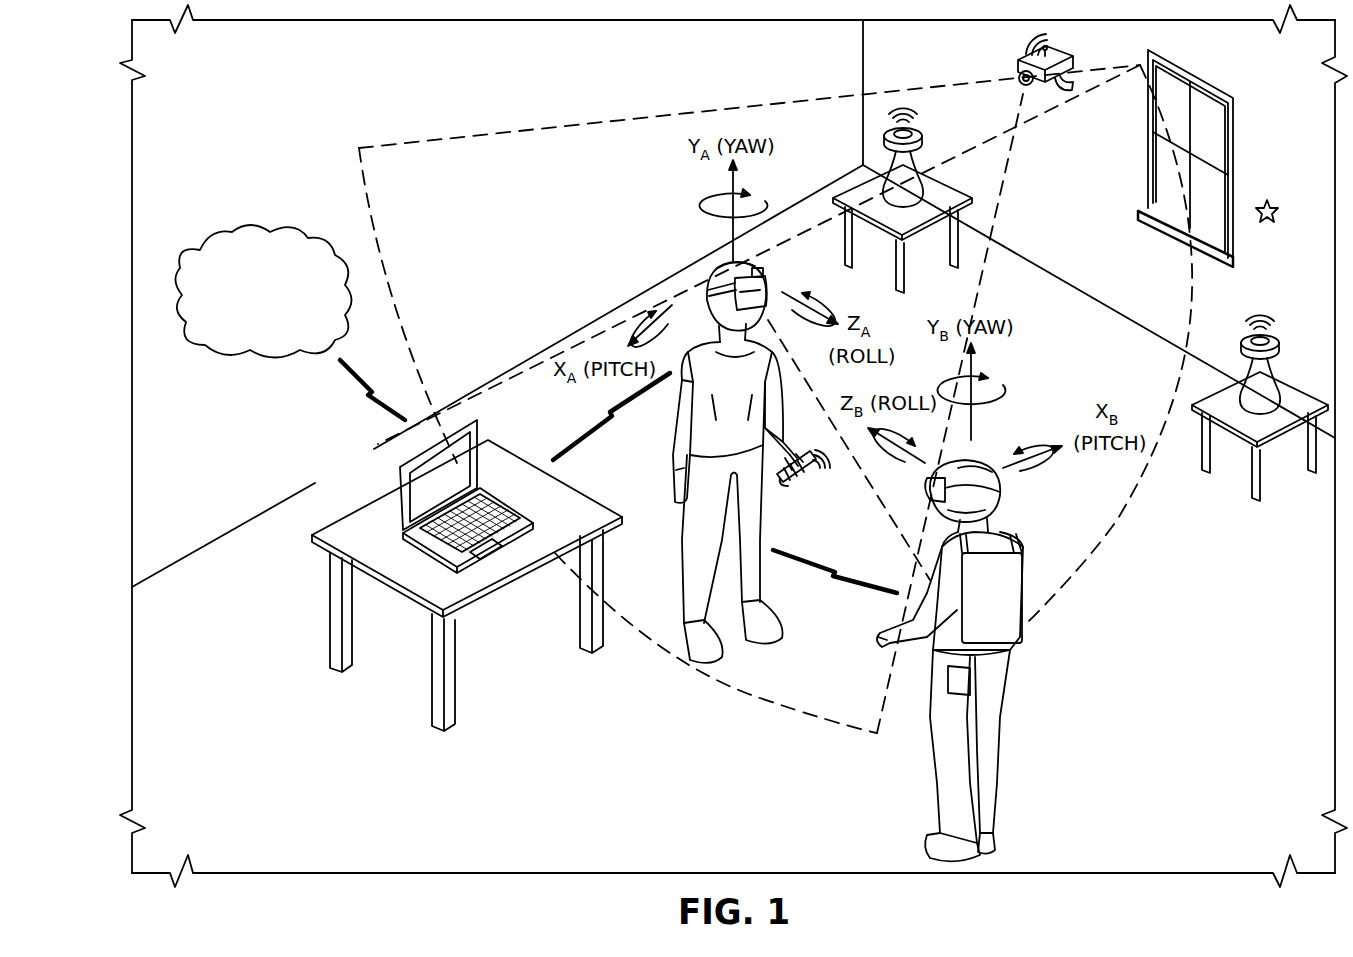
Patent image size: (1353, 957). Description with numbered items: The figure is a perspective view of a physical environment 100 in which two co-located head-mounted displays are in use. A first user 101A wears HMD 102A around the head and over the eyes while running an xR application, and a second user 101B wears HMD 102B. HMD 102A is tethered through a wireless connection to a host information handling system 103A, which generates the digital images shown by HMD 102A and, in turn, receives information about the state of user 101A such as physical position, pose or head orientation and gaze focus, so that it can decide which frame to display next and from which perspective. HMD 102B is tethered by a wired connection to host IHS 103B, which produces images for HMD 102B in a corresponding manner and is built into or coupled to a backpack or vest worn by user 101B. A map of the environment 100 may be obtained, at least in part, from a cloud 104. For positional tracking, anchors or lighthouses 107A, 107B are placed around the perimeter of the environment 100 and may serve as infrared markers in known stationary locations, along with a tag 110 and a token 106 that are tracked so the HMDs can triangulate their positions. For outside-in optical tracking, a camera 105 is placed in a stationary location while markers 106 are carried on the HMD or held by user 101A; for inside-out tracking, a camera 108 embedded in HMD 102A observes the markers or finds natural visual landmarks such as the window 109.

The physical environment 100 is at (125, 182).
The user 101A is at (678, 452).
The user 101B is at (1003, 758).
The Head-Mounted Display 102A is at (708, 284).
The Head-Mounted Display 102B is at (927, 483).
The host Information Handling System 103A is at (400, 478).
The host Information Handling System 103B is at (1022, 642).
The cloud 104 is at (281, 327).
The camera 105 is at (1074, 50).
The token 106 is at (812, 468).
The anchor 107A is at (920, 142).
The anchor 107B is at (1283, 350).
The camera 108 is at (763, 270).
The window 109 is at (1235, 147).
The tag 110 is at (1293, 190).